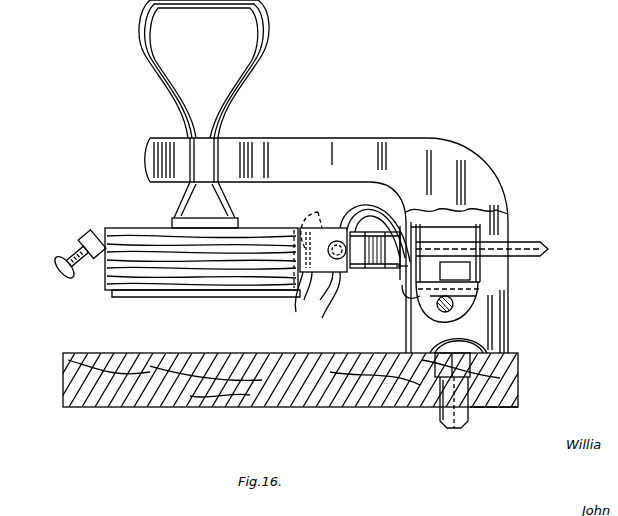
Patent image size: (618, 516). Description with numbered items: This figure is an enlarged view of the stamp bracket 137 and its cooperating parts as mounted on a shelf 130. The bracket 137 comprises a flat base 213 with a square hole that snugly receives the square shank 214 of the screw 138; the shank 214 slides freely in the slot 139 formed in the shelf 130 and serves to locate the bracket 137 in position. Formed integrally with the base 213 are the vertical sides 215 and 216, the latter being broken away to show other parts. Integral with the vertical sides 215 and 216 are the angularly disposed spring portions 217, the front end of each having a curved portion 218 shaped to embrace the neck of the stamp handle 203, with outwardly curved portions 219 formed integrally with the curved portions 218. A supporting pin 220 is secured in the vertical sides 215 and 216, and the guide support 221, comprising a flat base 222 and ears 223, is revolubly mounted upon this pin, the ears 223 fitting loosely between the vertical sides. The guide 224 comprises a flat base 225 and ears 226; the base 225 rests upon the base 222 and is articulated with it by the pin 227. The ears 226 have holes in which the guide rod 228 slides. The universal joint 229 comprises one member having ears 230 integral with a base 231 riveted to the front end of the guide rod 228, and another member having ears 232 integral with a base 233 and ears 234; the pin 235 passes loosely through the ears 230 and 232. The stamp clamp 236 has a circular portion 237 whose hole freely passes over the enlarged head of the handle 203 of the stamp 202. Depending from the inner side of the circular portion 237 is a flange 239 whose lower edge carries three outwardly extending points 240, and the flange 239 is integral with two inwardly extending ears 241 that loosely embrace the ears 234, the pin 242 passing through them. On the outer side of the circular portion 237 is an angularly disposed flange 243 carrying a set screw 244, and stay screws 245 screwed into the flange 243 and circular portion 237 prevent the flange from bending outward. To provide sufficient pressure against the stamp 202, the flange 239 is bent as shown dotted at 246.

The stamp handle 203 is at (204, 69).
The curved portion 218 is at (206, 152).
The outwardly curved portion 219 is at (170, 143).
The spring portion 217 is at (288, 160).
The stamp bracket 137 is at (499, 182).
The vertical side 216 is at (457, 203).
The base 231 is at (406, 216).
The ear 226 is at (476, 228).
The guide rod 228 is at (546, 249).
The flat base 225 is at (471, 274).
The guide 224 is at (478, 284).
The flat base 222 is at (482, 289).
The guide support 221 is at (460, 298).
The supporting pin 220 is at (454, 306).
The ear 223 is at (428, 316).
The pin 227 is at (420, 296).
The pin 235 is at (405, 272).
The vertical side 215 is at (490, 333).
The flat base 213 is at (499, 347).
The shelf 130 is at (208, 352).
The square shank 214 is at (470, 366).
The screw 138 is at (464, 425).
The slot 139 is at (482, 407).
The stamp 202 is at (131, 292).
The point 240 is at (259, 294).
The circular portion 237 is at (162, 224).
The set screw 244 is at (66, 266).
The angularly disposed flange 243 is at (80, 236).
The stay screw 245 is at (91, 227).
The bent flange position 246 is at (299, 230).
The ear 241 is at (335, 261).
The depending flange 239 is at (302, 294).
The pin 242 is at (331, 291).
The ear 232 is at (362, 272).
The base 233 is at (374, 222).
The ear 230 is at (380, 204).
The universal joint 229 is at (372, 232).
The stamp clamp 236 is at (317, 220).
The ear 234 is at (322, 216).